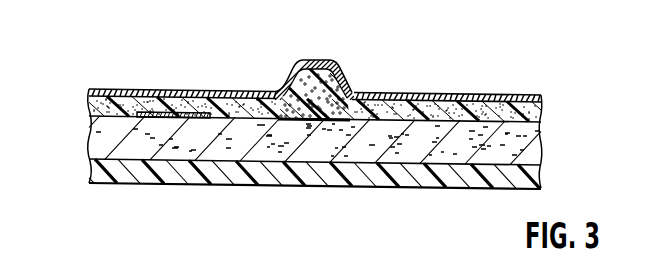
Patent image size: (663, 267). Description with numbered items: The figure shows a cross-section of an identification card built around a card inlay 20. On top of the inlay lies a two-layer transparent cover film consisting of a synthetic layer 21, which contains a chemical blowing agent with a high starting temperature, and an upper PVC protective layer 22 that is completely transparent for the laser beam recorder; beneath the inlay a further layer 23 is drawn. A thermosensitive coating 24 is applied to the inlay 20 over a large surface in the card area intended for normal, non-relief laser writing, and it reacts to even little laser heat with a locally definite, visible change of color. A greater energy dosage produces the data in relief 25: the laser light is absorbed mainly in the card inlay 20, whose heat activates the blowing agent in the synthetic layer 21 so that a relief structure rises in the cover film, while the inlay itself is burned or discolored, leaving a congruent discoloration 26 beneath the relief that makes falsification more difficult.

The card inlay 20 is at (106, 140).
The synthetic layer 21 is at (93, 108).
The PVC protective layer 22 is at (118, 91).
The base layer 23 is at (110, 172).
The thermosensitive coating 24 is at (177, 112).
The data in relief 25 is at (347, 75).
The congruent discoloration 26 is at (278, 91).